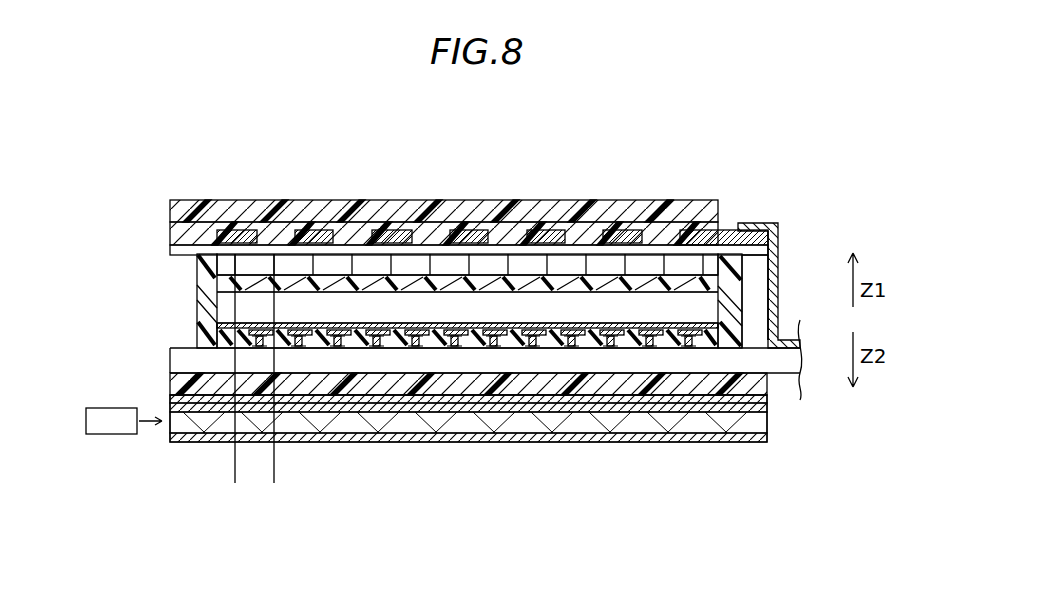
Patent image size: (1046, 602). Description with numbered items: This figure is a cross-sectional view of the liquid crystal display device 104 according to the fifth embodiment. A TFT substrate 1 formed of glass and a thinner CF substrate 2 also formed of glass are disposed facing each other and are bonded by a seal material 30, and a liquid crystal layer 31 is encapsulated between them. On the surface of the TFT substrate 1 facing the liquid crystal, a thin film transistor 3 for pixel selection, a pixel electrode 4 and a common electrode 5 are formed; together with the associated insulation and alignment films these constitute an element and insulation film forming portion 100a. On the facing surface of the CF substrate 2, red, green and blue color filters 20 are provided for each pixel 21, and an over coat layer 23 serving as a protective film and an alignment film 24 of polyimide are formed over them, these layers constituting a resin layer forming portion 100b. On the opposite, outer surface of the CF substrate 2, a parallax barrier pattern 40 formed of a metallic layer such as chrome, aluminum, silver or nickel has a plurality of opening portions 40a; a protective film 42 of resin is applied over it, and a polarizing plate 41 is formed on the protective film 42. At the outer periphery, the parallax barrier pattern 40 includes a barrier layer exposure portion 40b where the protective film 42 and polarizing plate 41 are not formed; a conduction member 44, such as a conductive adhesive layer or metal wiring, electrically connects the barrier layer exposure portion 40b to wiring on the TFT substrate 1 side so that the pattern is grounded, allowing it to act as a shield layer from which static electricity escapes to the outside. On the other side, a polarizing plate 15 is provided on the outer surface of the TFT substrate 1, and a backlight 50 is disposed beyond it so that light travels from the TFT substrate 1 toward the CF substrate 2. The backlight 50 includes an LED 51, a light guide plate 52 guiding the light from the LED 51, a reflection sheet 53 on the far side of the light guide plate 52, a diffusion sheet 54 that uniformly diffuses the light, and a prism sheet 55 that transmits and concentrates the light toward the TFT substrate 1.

The liquid crystal display device 104 is at (803, 150).
The polarizing plate 41 is at (183, 212).
The protective film 42 is at (183, 235).
The parallax barrier pattern 40 is at (318, 230).
The opening portions 40a is at (498, 230).
The barrier layer exposure portion 40b is at (733, 228).
The CF substrate 2 is at (183, 251).
The conduction member 44 is at (772, 224).
The seal material 30 is at (203, 300).
The resin layer forming portion 100b is at (186, 255).
The color filter 20 is at (384, 277).
The over coat layer 23 is at (447, 280).
The alignment film 24 is at (480, 291).
The liquid crystal layer 31 is at (426, 297).
The element and insulation film forming portion 100a is at (186, 323).
The thin film transistor 3 is at (327, 335).
The pixel electrode 4 is at (341, 337).
The common electrode 5 is at (350, 340).
The pixel 21 is at (264, 473).
The TFT substrate 1 is at (178, 357).
The polarizing plate 15 is at (175, 385).
The backlight 50 is at (137, 392).
The prism sheet 55 is at (218, 398).
The diffusion sheet 54 is at (203, 408).
The light guide plate 52 is at (177, 423).
The reflection sheet 53 is at (193, 436).
The LED 51 is at (125, 434).